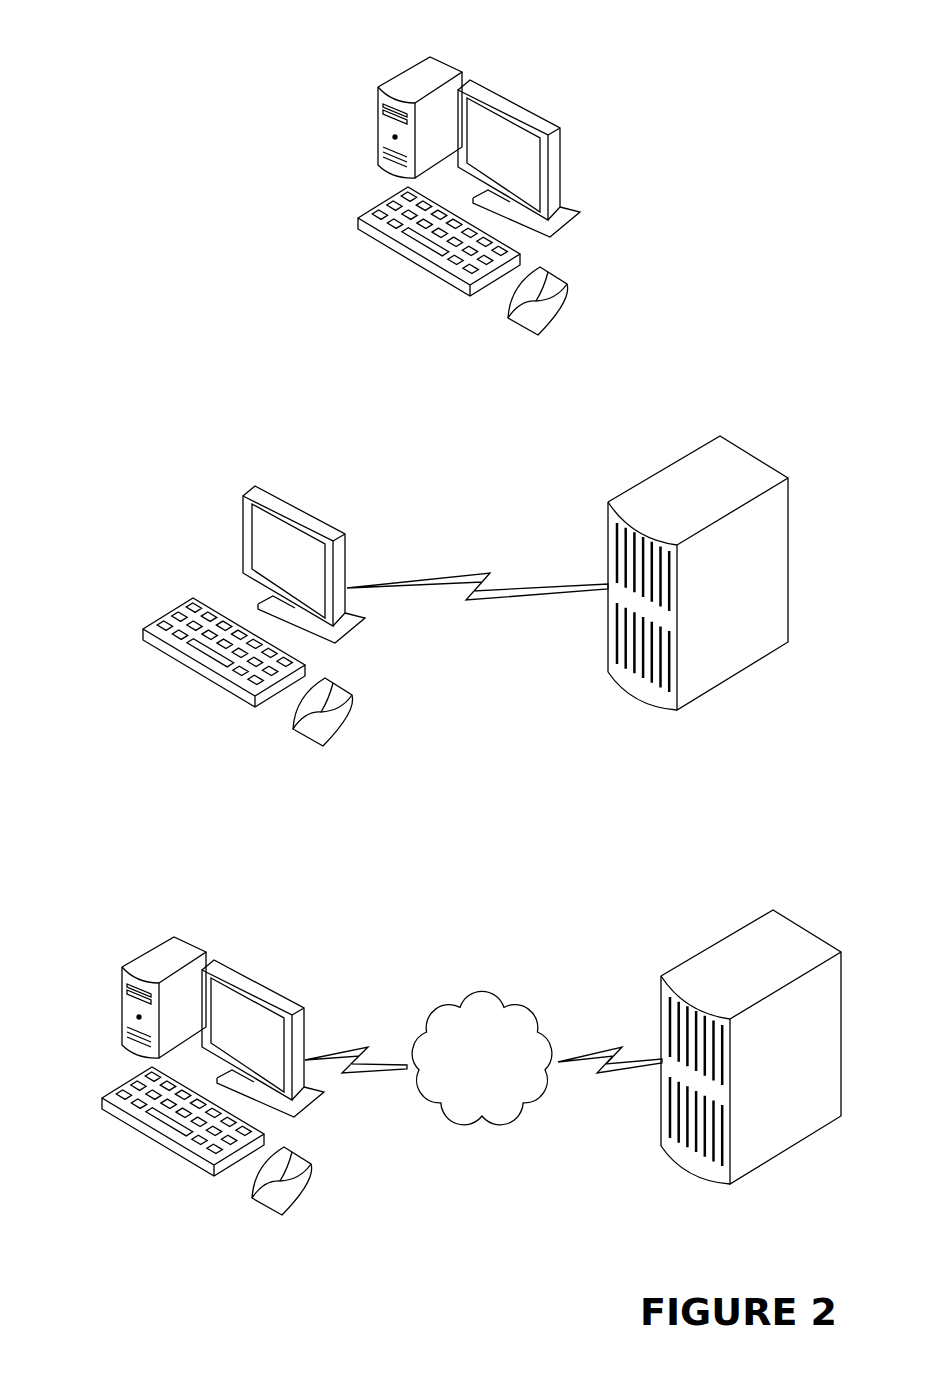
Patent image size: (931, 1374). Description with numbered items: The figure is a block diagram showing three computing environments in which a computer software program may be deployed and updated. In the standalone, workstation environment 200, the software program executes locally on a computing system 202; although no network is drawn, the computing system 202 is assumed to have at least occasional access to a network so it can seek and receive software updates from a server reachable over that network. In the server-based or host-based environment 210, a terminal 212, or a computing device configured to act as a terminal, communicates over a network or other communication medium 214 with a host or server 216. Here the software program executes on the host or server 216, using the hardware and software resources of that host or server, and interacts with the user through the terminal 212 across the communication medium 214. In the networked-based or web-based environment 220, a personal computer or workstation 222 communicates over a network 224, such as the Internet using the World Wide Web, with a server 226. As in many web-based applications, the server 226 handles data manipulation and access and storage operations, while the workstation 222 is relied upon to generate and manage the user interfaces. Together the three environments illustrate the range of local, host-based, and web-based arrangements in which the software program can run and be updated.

The standalone, workstation environment 200 is at (110, 52).
The computing system 202 is at (378, 128).
The server-based or host-based environment 210 is at (110, 422).
The terminal 212 is at (243, 538).
The network or other communication medium 214 is at (477, 599).
The host or server 216 is at (608, 542).
The networked-based or web-based environment 220 is at (123, 883).
The personal computer or workstation 222 is at (90, 998).
The network 224 is at (502, 1100).
The server 226 is at (662, 1010).